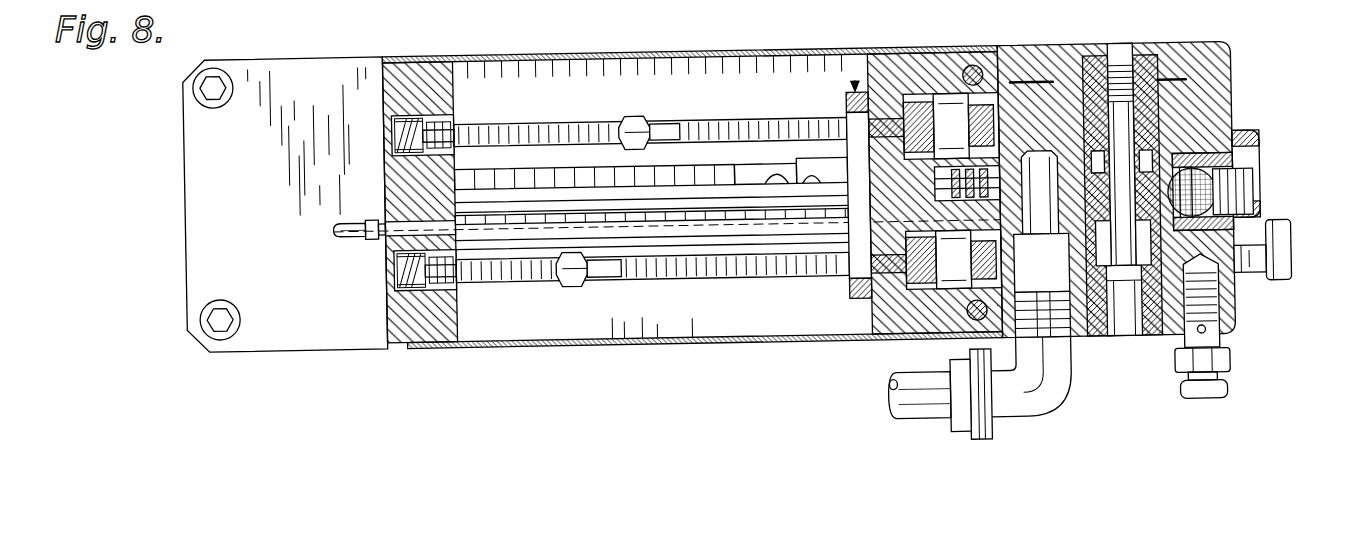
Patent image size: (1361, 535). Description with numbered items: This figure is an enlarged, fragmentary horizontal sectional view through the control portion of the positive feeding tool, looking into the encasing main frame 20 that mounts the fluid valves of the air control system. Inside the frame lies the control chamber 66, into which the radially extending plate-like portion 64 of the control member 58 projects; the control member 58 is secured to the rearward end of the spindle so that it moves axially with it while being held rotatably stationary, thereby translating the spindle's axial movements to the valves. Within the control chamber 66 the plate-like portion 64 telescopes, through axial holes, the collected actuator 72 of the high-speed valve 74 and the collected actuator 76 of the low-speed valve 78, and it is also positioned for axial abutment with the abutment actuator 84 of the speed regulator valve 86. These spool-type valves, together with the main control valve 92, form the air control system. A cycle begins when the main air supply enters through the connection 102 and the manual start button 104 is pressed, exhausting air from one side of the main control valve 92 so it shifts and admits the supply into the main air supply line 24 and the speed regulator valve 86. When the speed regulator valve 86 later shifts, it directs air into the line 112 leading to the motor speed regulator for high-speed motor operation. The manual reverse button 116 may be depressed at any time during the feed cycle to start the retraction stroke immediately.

The main frame 20 is at (330, 53).
The main air supply line 24 is at (893, 410).
The control member 58 is at (857, 85).
The plate-like portion 64 is at (842, 99).
The control chamber 66 is at (705, 87).
The collected actuator 72 is at (600, 124).
The high-speed valve 74 is at (935, 116).
The collected actuator 76 is at (700, 284).
The low-speed valve 78 is at (878, 317).
The abutment actuator 84 is at (845, 267).
The speed regulator valve 86 is at (1035, 160).
The main control valve 92 is at (1160, 135).
The connection 102 is at (1263, 156).
The manual start button 104 is at (1217, 403).
The line 112 is at (347, 238).
The manual reverse button 116 is at (1334, 208).